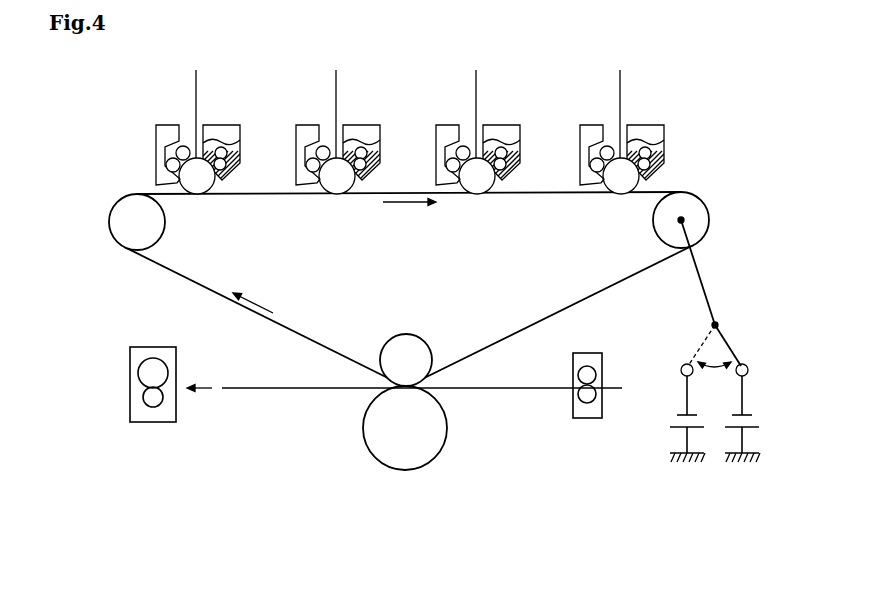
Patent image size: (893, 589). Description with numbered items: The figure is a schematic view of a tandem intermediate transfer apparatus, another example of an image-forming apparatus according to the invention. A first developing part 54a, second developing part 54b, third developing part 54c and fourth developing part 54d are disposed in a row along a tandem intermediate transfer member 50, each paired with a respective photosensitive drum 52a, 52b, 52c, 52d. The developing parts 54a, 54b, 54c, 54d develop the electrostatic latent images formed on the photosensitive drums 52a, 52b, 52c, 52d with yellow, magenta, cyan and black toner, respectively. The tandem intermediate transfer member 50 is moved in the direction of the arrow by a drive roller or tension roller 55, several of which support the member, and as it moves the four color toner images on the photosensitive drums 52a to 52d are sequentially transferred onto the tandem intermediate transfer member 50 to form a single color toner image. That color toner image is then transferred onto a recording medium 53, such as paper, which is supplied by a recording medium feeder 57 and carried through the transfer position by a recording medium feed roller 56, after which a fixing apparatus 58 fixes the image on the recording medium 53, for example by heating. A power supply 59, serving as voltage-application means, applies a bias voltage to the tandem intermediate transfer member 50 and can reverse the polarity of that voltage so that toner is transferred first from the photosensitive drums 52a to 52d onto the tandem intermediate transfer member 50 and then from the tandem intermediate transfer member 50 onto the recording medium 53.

The tandem intermediate transfer member 50 is at (190, 283).
The photosensitive drum 52a is at (159, 132).
The photosensitive drum 52b is at (298, 132).
The photosensitive drum 52c is at (439, 132).
The photosensitive drum 52d is at (583, 132).
The recording medium 53 is at (515, 390).
The first developing part 54a is at (224, 112).
The second developing part 54b is at (364, 112).
The third developing part 54c is at (504, 112).
The fourth developing part 54d is at (648, 112).
The drive roller or tension roller 55 is at (123, 222).
The recording medium feed roller 56 is at (405, 452).
The recording medium feeder 57 is at (585, 420).
The fixing apparatus 58 is at (157, 425).
The power supply 59 is at (740, 330).